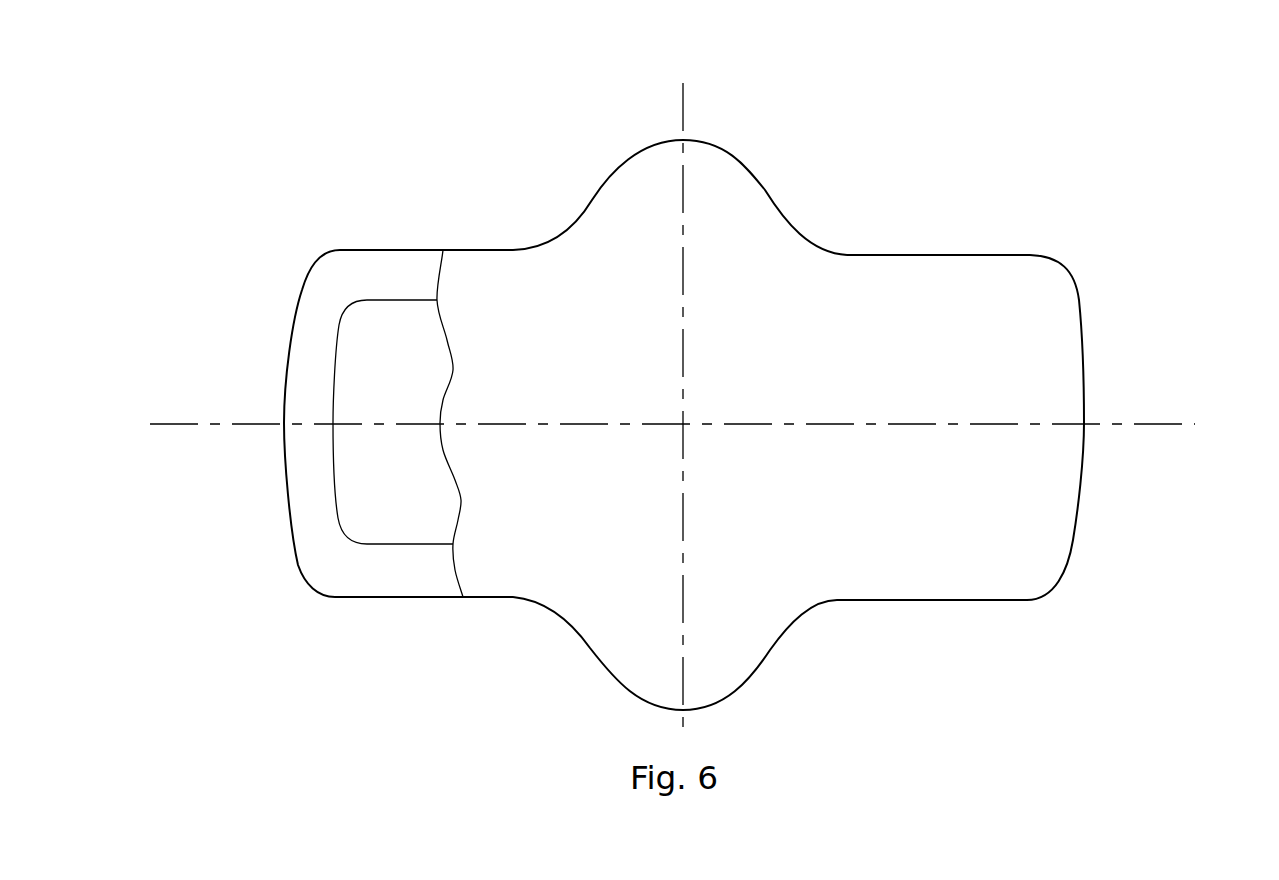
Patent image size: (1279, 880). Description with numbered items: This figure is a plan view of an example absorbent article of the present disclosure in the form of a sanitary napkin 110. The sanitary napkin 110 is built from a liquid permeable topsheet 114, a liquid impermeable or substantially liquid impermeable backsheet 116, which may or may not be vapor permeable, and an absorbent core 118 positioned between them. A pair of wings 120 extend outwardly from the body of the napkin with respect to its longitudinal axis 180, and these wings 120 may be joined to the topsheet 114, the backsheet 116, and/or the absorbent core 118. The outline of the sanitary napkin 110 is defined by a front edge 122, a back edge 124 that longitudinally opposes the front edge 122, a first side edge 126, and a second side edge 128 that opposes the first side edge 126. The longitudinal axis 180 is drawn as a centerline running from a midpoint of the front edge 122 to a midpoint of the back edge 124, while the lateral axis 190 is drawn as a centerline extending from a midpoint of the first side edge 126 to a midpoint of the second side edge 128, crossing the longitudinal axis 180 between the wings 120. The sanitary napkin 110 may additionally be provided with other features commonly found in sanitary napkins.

The sanitary napkin 110 is at (667, 407).
The liquid permeable topsheet 114 is at (613, 557).
The liquid impermeable backsheet 116 is at (330, 300).
The absorbent core 118 is at (393, 318).
The wings 120 is at (743, 212).
The front edge 122 is at (1080, 347).
The back edge 124 is at (290, 358).
The first side edge 126 is at (887, 255).
The second side edge 128 is at (840, 601).
The longitudinal axis 180 is at (700, 428).
The lateral axis 190 is at (683, 112).